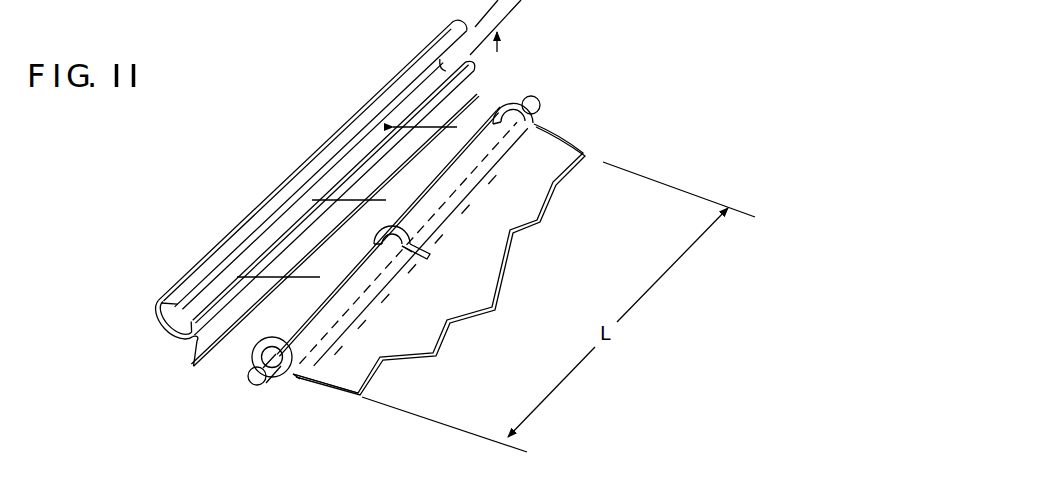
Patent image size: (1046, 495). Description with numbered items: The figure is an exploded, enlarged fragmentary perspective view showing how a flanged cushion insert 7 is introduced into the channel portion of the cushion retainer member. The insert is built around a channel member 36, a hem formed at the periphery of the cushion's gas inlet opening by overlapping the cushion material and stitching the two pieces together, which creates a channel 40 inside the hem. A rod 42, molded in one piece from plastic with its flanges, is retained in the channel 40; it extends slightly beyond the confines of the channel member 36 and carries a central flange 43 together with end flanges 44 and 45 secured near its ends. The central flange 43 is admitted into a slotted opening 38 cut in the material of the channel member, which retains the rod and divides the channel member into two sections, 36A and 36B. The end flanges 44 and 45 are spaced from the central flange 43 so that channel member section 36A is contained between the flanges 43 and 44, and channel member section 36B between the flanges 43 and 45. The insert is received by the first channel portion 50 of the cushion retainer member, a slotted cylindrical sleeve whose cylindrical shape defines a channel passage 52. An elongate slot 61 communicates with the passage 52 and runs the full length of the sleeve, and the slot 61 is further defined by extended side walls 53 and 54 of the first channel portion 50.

The flanged cushion insert 7 is at (641, 145).
The channel member 36 is at (440, 218).
The channel member section 36A is at (312, 297).
The channel member section 36B is at (466, 146).
The slotted opening 38 is at (431, 247).
The channel 40 is at (295, 377).
The rod 42 is at (540, 102).
The central flange 43 is at (403, 258).
The end flange 44 is at (280, 378).
The end flange 45 is at (518, 98).
The first channel portion 50 is at (199, 267).
The channel passage 52 is at (158, 321).
The extended side wall 53 is at (408, 83).
The extended side wall 54 is at (186, 361).
The elongate slot 61 is at (263, 240).